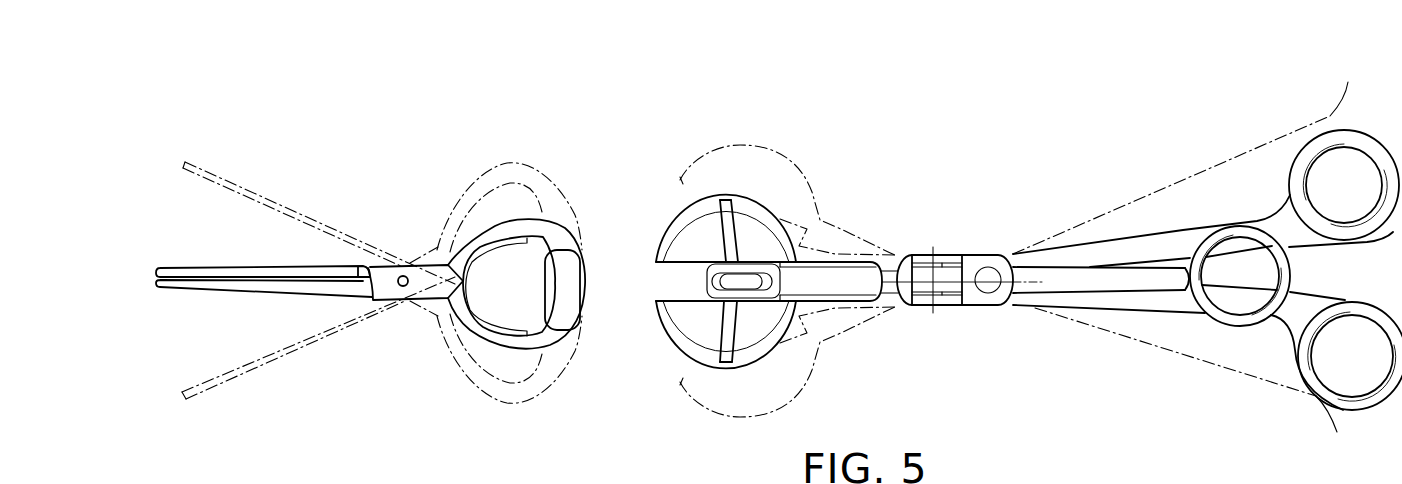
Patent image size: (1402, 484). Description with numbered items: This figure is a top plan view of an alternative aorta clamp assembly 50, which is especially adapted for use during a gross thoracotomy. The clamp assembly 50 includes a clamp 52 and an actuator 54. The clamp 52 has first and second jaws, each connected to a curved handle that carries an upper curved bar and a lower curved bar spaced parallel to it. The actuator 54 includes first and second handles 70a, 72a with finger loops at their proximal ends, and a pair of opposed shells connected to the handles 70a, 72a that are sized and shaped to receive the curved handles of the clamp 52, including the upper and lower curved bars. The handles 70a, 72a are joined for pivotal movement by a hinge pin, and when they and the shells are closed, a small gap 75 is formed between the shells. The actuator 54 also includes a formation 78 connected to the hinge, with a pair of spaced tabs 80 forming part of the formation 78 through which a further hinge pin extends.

The aorta clamp assembly 50 is at (995, 240).
The clamp 52 is at (553, 137).
The actuator 54 is at (1190, 148).
The first handle 70a is at (1143, 239).
The second handle 72a is at (1097, 307).
The gap 75 is at (672, 283).
The formation 78 is at (967, 232).
The tabs 80 is at (947, 257).